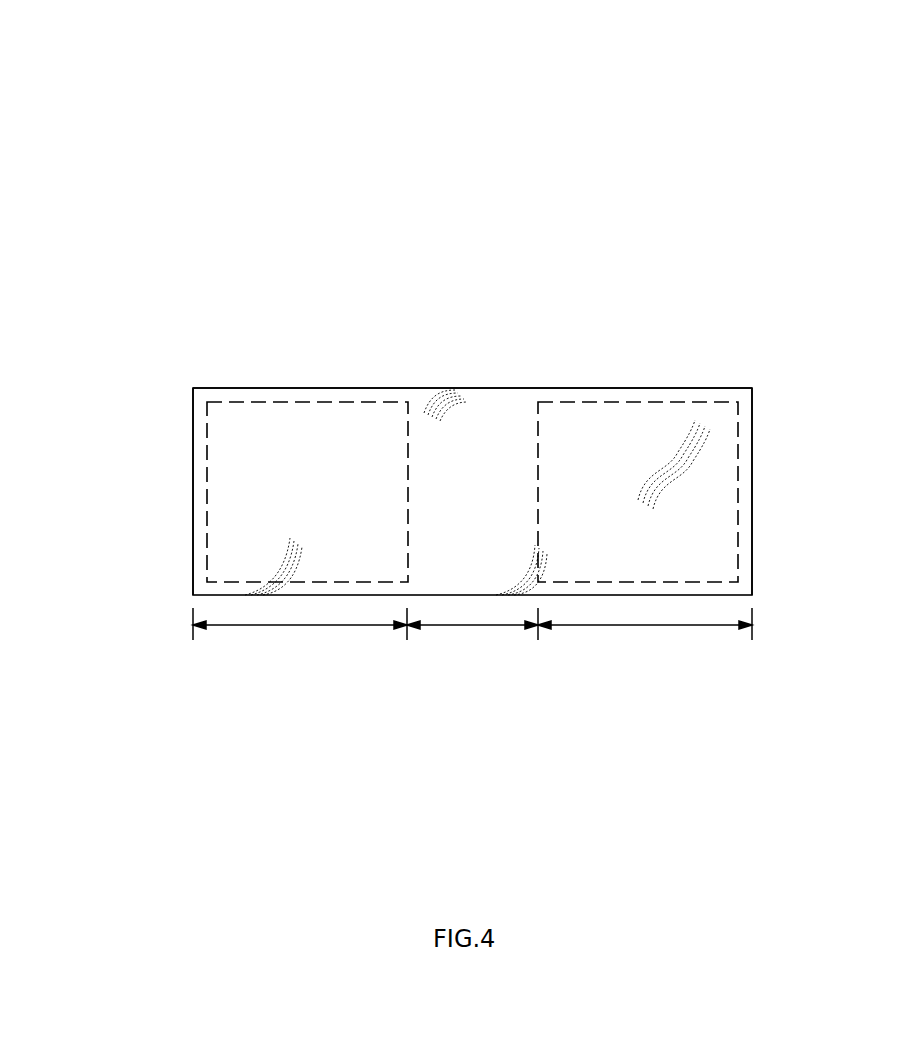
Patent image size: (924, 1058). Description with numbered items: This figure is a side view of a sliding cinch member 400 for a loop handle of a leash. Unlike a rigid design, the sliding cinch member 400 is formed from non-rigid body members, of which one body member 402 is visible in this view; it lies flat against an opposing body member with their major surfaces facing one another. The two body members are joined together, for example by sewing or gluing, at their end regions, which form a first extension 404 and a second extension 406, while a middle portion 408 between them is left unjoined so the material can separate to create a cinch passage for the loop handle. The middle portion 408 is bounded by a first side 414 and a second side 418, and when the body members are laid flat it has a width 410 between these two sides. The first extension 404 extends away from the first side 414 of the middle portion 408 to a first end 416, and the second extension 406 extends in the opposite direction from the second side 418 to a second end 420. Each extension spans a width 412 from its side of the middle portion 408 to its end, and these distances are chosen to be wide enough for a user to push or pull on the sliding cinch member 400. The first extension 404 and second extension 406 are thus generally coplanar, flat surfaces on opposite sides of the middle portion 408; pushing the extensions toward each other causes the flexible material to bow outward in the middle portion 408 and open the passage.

The sliding cinch member 400 is at (906, 56).
The body member 402 is at (648, 388).
The first extension 404 is at (288, 400).
The second extension 406 is at (738, 446).
The middle portion 408 is at (473, 420).
The width 410 is at (475, 625).
The width 412 is at (305, 626).
The first side 414 is at (406, 450).
The first end 416 is at (193, 480).
The second side 418 is at (536, 428).
The second end 420 is at (752, 497).